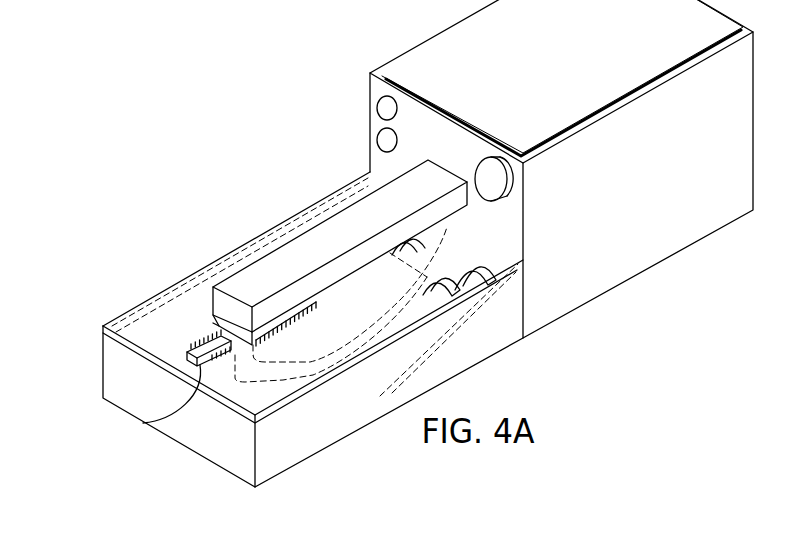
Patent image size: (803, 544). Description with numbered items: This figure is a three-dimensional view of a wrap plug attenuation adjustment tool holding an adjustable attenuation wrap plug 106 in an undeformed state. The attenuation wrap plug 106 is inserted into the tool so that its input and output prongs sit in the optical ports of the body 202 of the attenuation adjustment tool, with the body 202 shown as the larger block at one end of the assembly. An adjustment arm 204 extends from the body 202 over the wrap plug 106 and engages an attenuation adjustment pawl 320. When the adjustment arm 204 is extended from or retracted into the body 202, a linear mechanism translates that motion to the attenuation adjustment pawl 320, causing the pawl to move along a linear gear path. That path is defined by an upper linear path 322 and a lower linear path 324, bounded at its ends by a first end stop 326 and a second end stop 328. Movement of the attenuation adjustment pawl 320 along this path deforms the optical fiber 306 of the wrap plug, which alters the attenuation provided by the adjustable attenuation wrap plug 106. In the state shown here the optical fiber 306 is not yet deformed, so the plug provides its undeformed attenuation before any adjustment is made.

The attenuation wrap plug 106 is at (146, 278).
The body 202 is at (622, 187).
The adjustment arm 204 is at (337, 237).
The optical fiber 306 is at (378, 338).
The attenuation adjustment pawl 320 is at (230, 335).
The upper linear path 322 is at (200, 338).
The lower linear path 324 is at (215, 364).
The first end stop 326 is at (315, 305).
The second end stop 328 is at (143, 423).